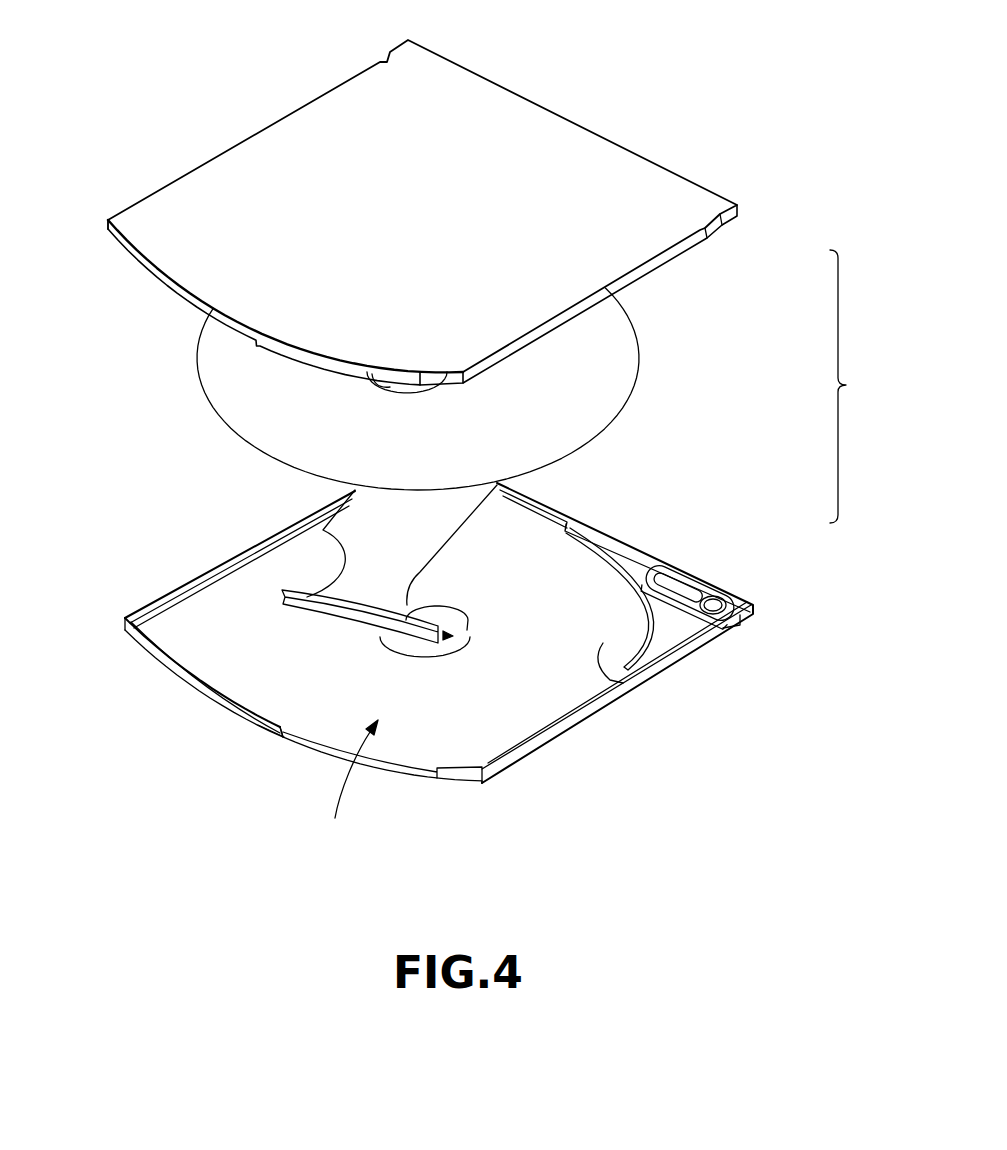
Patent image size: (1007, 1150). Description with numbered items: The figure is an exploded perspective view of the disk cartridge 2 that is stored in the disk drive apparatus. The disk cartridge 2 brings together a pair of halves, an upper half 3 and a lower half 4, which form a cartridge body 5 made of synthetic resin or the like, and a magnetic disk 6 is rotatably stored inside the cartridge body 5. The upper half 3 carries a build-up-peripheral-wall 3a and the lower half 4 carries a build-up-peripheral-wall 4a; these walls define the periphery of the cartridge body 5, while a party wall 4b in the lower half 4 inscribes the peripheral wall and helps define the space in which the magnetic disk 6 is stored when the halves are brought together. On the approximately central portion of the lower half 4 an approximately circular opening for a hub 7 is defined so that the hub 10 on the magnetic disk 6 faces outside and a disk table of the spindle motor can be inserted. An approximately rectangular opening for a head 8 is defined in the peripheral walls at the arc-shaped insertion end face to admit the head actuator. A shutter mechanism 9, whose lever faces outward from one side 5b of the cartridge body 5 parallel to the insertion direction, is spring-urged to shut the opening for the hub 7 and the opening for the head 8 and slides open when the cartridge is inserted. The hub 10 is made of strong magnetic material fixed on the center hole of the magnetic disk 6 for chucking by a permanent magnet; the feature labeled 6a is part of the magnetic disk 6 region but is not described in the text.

The disk cartridge 2 is at (229, 53).
The upper half 3 is at (692, 205).
The build-up-peripheral-wall 3a is at (132, 255).
The lower half 4 is at (680, 568).
The build-up-peripheral-wall 4a is at (223, 710).
The party wall 4b is at (625, 684).
The cartridge body 5 is at (850, 386).
The one side of the cartridge body 5b is at (498, 725).
The magnetic disk 6 is at (200, 337).
The center hub of disc 6a is at (370, 374).
The opening for a hub 7 is at (468, 616).
The opening for a head 8 is at (349, 788).
The shutter mechanism 9 is at (357, 530).
The hub 10 is at (402, 385).